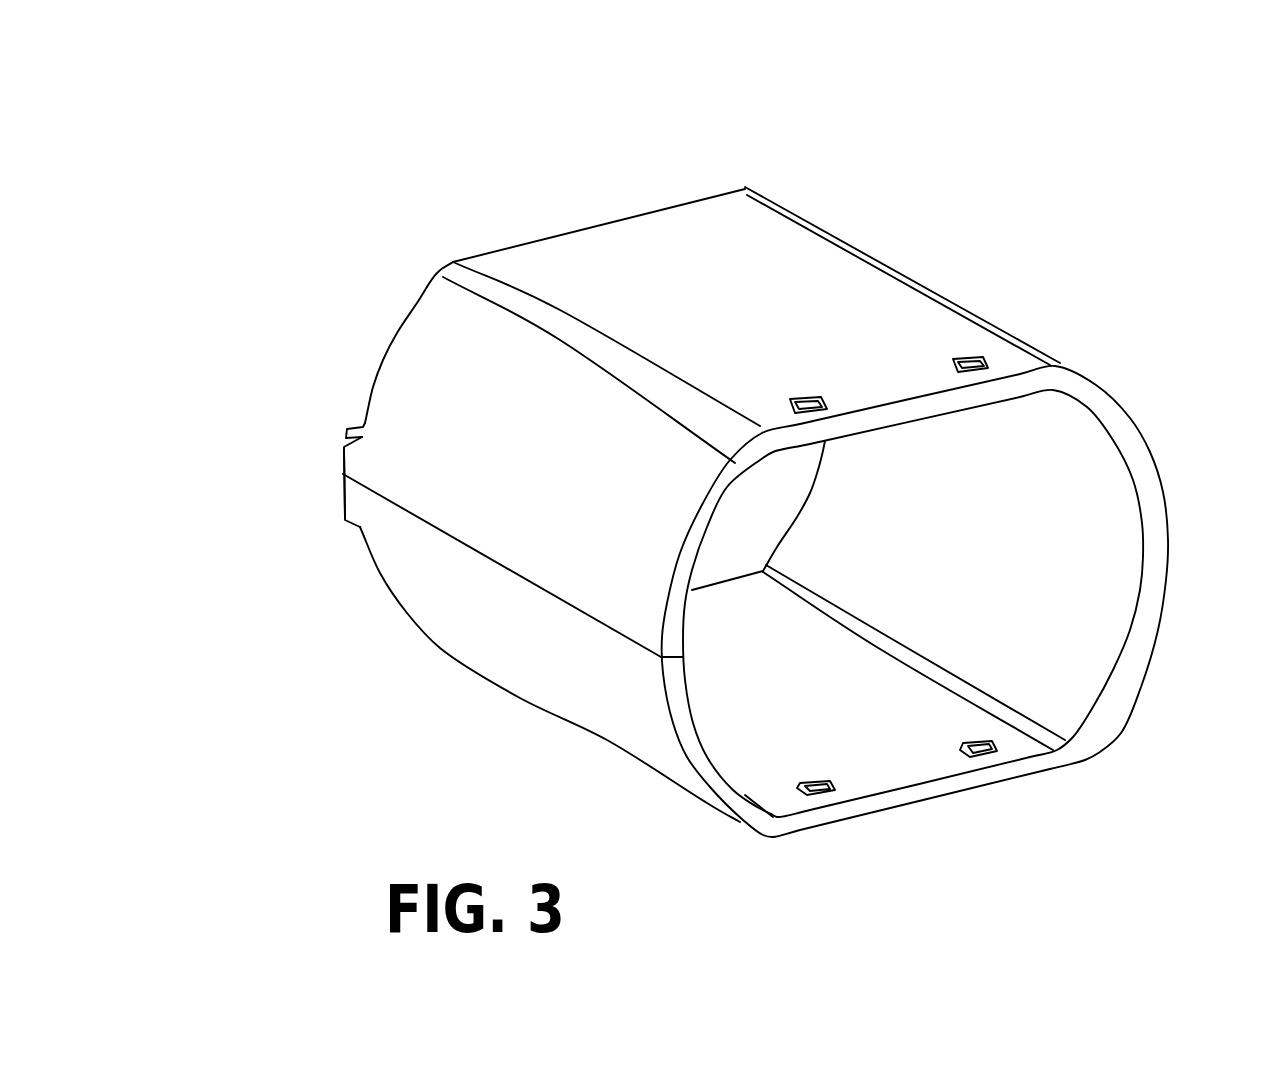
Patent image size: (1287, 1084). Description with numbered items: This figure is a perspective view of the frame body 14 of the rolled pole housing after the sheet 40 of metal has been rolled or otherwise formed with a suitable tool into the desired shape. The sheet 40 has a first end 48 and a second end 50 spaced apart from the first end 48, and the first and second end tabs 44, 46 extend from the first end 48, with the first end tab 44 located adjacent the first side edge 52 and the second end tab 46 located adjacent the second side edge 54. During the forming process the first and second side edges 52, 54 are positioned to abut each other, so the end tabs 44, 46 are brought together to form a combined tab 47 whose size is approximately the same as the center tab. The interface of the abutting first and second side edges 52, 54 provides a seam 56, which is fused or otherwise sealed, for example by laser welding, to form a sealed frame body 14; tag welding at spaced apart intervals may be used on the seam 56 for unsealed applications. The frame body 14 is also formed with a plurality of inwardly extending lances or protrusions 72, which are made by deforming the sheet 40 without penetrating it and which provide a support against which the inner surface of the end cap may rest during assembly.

The frame body 14 is at (1007, 302).
The sheet of metal 40 is at (778, 278).
The first end tab 44 is at (343, 447).
The second end tab 46 is at (353, 498).
The combined tab 47 is at (333, 467).
The first end 48 is at (565, 234).
The second end 50 is at (908, 793).
The first side edge 52 is at (587, 620).
The second side edge 54 is at (477, 555).
The seam 56 is at (543, 585).
The protrusions 72 is at (977, 363).